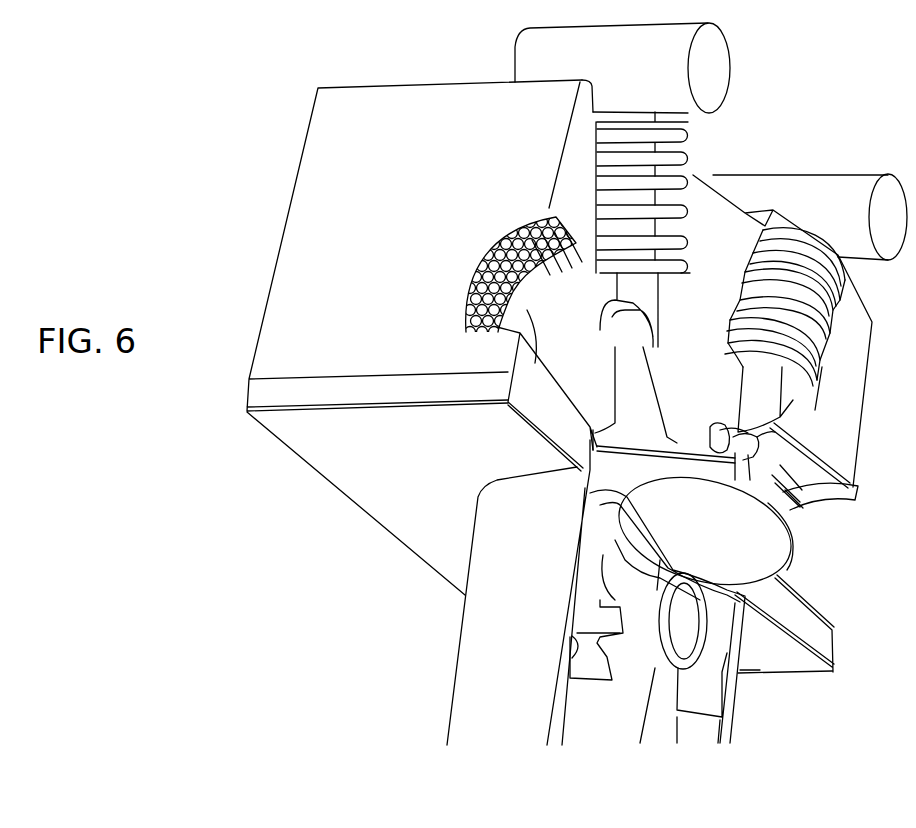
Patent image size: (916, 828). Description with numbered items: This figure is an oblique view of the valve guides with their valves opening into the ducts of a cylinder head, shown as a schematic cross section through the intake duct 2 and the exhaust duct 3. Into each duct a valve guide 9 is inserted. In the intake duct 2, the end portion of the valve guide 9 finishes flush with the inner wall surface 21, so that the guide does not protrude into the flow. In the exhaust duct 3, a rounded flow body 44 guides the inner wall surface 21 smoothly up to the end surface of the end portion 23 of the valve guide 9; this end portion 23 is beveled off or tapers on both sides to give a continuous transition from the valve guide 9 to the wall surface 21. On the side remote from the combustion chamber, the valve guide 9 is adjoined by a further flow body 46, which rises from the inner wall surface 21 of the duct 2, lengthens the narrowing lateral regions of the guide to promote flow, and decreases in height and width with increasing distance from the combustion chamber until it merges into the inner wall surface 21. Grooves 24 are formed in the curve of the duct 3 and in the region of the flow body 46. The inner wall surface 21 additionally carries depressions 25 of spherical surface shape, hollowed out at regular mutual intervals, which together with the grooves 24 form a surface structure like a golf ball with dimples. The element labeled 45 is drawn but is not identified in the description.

The intake duct 2 is at (510, 327).
The exhaust duct 3 is at (817, 478).
The valve guide 9 is at (655, 305).
The inner wall surface 21 is at (800, 558).
The end portion of the valve guide 23 is at (653, 347).
The grooves 24 is at (523, 217).
The depressions 25 is at (480, 277).
The flow body 44 is at (734, 452).
The valve keeper half 45 is at (783, 430).
The flow body 46 is at (795, 426).